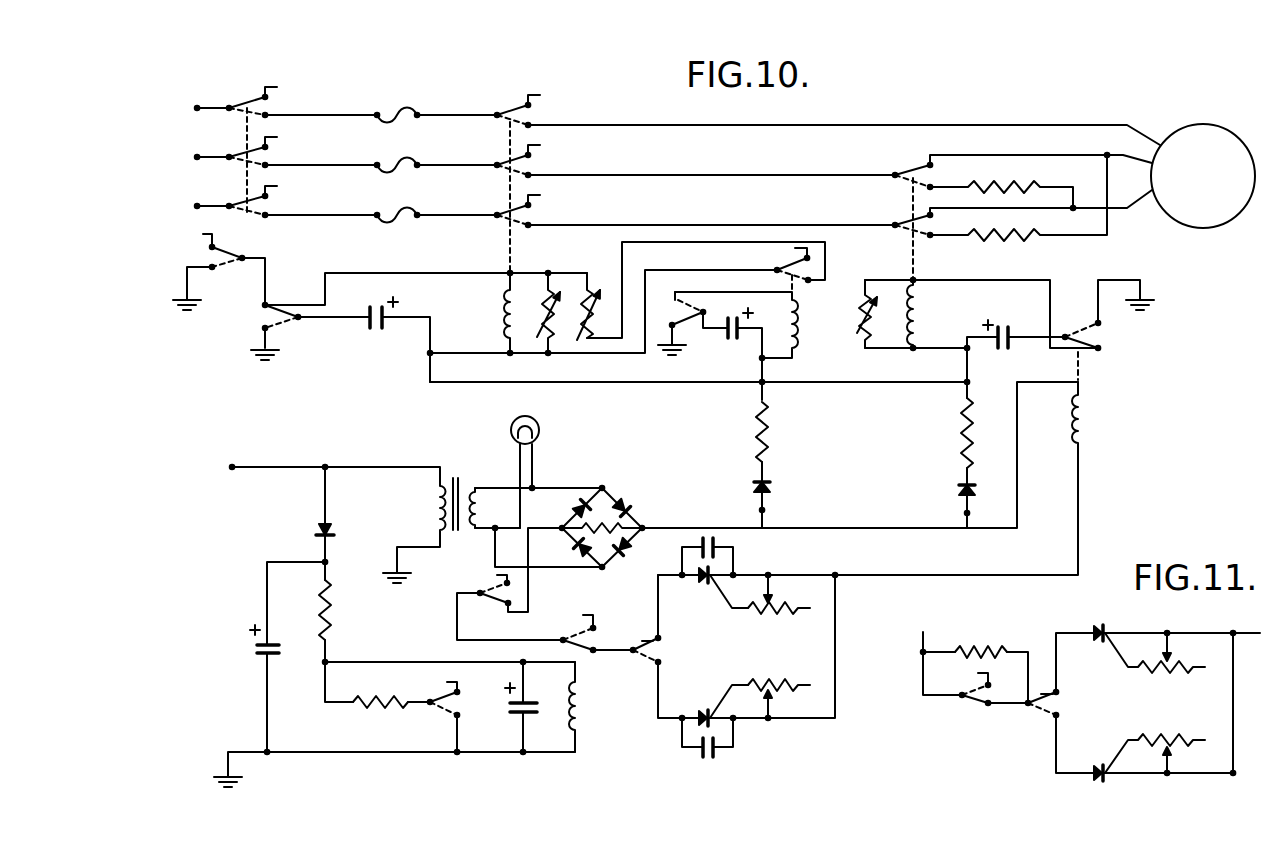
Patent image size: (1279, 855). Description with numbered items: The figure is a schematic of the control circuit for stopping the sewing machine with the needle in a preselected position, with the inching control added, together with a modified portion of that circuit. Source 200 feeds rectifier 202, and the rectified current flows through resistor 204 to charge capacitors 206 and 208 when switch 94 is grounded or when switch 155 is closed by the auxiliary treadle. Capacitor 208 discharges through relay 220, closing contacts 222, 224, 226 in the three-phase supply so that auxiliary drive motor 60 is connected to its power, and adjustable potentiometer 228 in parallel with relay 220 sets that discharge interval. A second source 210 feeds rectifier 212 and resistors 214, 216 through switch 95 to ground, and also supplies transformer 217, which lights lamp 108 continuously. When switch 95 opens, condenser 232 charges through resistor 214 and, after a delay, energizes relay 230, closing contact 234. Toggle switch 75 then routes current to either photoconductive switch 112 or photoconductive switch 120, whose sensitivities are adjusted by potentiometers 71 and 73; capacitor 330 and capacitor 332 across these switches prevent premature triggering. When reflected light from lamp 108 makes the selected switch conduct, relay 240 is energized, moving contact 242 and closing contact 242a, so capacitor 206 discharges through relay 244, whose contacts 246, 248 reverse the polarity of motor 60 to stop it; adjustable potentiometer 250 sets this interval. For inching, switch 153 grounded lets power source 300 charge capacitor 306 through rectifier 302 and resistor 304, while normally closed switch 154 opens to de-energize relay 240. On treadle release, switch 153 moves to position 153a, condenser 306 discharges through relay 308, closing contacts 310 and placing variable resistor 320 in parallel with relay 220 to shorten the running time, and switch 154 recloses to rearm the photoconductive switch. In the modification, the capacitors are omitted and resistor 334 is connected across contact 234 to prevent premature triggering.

In FIG. 10, the auxiliary drive motor 60 is at (1203, 228).
In FIG. 10, the potentiometer 71 is at (778, 615).
In FIG. 10, the potentiometer 73 is at (766, 680).
In FIG. 10, the toggle switch 75 is at (661, 645).
In FIG. 11, the toggle switch 75 is at (1062, 700).
In FIG. 10, the switch 94 is at (262, 312).
In FIG. 10, the switch 95 is at (437, 705).
In FIG. 10, the lamp 108 is at (539, 430).
In FIG. 10, the photoconductive switch 112 is at (705, 585).
In FIG. 11, the photoconductive switch 112 is at (1101, 624).
In FIG. 10, the photoconductive switch 120 is at (706, 710).
In FIG. 11, the photoconductive switch 120 is at (1100, 781).
In FIG. 10, the switch 153 is at (691, 323).
In FIG. 10, the switch position 153a is at (675, 303).
In FIG. 10, the normally closed switch 154 is at (490, 601).
In FIG. 10, the switch 155 is at (227, 250).
In FIG. 10, the power source 200 is at (962, 513).
In FIG. 10, the rectifier 202 is at (958, 489).
In FIG. 10, the resistor 204 is at (958, 432).
In FIG. 10, the capacitor 206 is at (1009, 327).
In FIG. 10, the capacitor 208 is at (382, 329).
In FIG. 10, the source 210 is at (232, 463).
In FIG. 10, the rectifier 212 is at (318, 531).
In FIG. 10, the resistor 214 is at (333, 612).
In FIG. 10, the resistor 216 is at (372, 699).
In FIG. 10, the transformer 217 is at (462, 478).
In FIG. 10, the relay coil 220 is at (505, 317).
In FIG. 10, the contact 222 is at (534, 110).
In FIG. 10, the contact 224 is at (534, 160).
In FIG. 10, the contact 226 is at (534, 210).
In FIG. 10, the adjustable potentiometer 228 is at (556, 278).
In FIG. 10, the single pole, double throw relay 230 is at (584, 710).
In FIG. 10, the condenser 232 is at (541, 694).
In FIG. 10, the contact 234 is at (602, 633).
In FIG. 11, the contact 234 is at (978, 702).
In FIG. 10, the relay 240 is at (1084, 420).
In FIG. 10, the contact 242 is at (1100, 341).
In FIG. 10, the contact 242a is at (1101, 351).
In FIG. 10, the double pole, double throw relay 244 is at (922, 310).
In FIG. 10, the contact 246 is at (912, 172).
In FIG. 10, the contact 248 is at (912, 224).
In FIG. 10, the adjustable potentiometer 250 is at (860, 318).
In FIG. 10, the power source 300 is at (766, 510).
In FIG. 10, the rectifier 302 is at (770, 488).
In FIG. 10, the resistor 304 is at (752, 415).
In FIG. 10, the capacitor 306 is at (737, 340).
In FIG. 10, the relay 308 is at (800, 336).
In FIG. 10, the contacts 310 is at (790, 267).
In FIG. 10, the variable resistor 320 is at (601, 342).
In FIG. 10, the capacitor 330 is at (704, 537).
In FIG. 10, the capacitor 332 is at (702, 758).
In FIG. 11, the resistor 334 is at (983, 650).